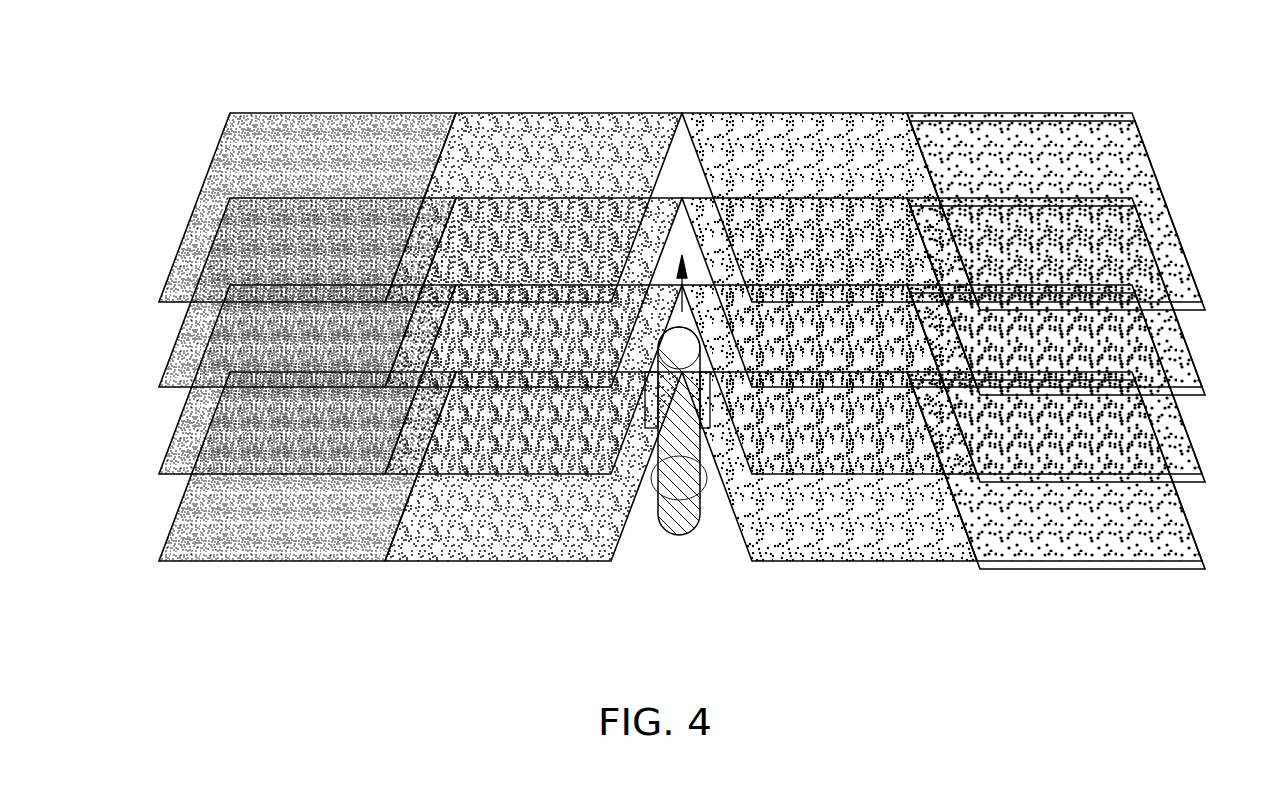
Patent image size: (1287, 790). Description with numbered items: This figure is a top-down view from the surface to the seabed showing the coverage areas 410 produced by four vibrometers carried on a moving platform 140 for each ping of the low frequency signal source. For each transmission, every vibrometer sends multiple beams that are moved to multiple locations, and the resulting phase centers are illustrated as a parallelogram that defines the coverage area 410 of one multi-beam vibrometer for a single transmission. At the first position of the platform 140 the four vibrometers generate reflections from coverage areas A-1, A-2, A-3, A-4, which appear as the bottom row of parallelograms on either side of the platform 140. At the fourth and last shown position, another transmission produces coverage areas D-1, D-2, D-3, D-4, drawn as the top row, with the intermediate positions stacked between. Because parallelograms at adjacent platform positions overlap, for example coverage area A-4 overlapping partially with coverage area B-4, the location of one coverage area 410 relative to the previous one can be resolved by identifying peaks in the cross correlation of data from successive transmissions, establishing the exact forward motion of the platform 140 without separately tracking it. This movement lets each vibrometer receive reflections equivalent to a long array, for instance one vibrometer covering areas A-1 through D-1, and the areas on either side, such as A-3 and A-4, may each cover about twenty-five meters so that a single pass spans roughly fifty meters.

The coverage area 410 is at (706, 343).
The platform 140 is at (692, 520).
The coverage area D-1 is at (355, 118).
The coverage area D-2 is at (545, 120).
The coverage area D-3 is at (828, 120).
The coverage area D-4 is at (990, 120).
The coverage area A-1 is at (278, 553).
The coverage area A-2 is at (490, 553).
The coverage area A-3 is at (873, 563).
The coverage area A-4 is at (1073, 567).
The coverage area B-4 is at (1188, 448).